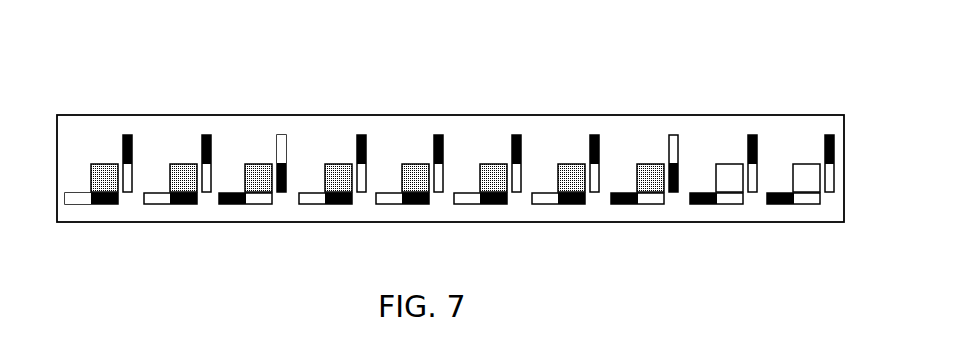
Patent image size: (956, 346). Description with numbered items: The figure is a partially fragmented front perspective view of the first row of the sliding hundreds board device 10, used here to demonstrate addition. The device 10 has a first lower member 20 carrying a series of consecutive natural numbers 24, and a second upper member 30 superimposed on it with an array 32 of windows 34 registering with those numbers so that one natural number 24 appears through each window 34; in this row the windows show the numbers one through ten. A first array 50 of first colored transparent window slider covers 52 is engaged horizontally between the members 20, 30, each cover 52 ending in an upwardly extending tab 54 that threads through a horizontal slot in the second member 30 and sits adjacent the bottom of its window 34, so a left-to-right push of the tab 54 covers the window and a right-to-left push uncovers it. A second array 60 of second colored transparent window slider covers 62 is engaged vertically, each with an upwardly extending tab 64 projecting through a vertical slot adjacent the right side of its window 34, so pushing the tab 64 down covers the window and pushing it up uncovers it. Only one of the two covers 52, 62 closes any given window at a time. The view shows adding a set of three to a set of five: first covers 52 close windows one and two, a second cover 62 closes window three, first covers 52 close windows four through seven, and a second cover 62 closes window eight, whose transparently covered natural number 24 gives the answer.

The sliding hundreds board device 10 is at (450, 124).
The first lower member 20 is at (721, 167).
The natural numbers 24 is at (252, 172).
The second upper member 30 is at (386, 135).
The array of windows 32 is at (317, 135).
The window 34 is at (282, 170).
The first array of first colored transparent window slider covers 50 is at (90, 182).
The first colored transparent window slider cover 52 is at (97, 204).
The upwardly extending tab 54 is at (111, 201).
The second array of second colored transparent window slider covers 60 is at (125, 133).
The second colored transparent window slider cover 62 is at (278, 195).
The upwardly extending tab 64 is at (287, 193).